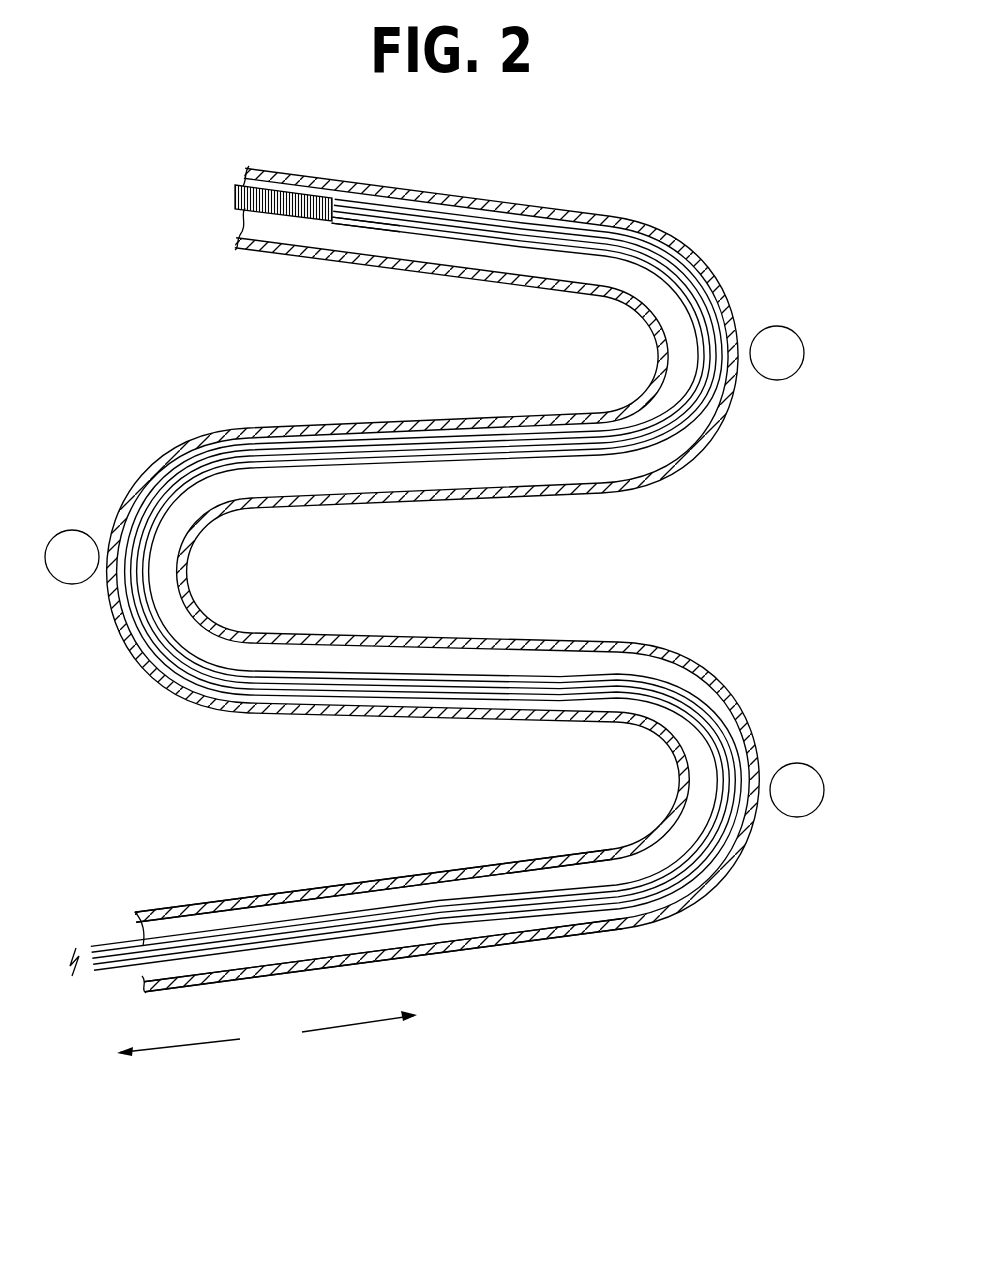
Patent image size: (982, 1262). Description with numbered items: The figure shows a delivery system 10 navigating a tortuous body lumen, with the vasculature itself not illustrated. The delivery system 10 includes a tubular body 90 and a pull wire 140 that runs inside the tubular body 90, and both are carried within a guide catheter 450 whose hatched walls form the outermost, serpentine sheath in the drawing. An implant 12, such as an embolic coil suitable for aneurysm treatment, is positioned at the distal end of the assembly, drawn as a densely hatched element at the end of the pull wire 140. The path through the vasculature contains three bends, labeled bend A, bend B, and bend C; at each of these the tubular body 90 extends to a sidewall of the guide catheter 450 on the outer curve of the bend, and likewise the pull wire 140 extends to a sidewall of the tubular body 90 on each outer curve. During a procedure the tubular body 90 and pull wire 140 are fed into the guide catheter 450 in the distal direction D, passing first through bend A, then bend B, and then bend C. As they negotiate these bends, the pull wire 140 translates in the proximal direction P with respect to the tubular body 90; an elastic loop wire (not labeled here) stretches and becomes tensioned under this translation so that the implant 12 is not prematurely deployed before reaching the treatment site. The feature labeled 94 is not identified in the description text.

The delivery system 10 is at (414, 547).
The implant 12 is at (312, 184).
The distal end of inner member 94 is at (323, 220).
The pull wire 140 is at (427, 452).
The guide catheter 450 is at (183, 917).
The tubular body 90 is at (500, 936).
The bend A is at (797, 790).
The bend B is at (72, 557).
The bend C is at (777, 353).
The proximal direction P is at (178, 1046).
The distal direction D is at (373, 1025).